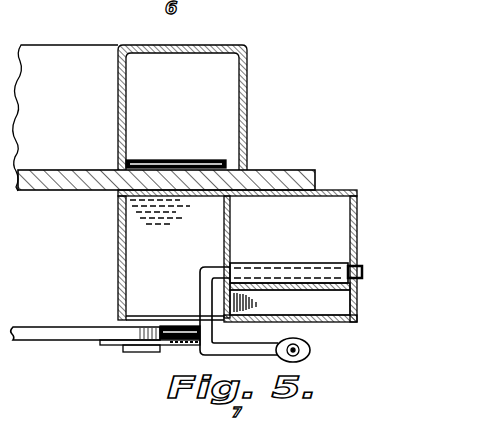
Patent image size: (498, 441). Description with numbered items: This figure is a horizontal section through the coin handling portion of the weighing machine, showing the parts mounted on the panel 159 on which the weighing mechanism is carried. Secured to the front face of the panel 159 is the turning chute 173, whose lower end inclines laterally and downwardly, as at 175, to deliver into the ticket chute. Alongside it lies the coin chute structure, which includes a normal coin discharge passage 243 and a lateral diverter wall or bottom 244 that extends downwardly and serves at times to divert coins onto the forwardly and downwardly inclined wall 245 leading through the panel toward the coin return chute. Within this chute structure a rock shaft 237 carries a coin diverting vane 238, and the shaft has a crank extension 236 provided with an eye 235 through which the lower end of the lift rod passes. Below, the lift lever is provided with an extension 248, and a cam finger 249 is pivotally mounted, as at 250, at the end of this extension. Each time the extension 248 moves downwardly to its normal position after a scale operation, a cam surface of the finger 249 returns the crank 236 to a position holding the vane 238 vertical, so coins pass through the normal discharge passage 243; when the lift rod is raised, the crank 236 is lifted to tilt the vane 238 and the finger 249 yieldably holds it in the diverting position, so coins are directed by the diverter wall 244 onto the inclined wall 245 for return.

The laterally and downwardly inclined lower end of turning chute 175 is at (50, 62).
The turning chute 173 is at (227, 68).
The panel 159 is at (75, 160).
The forwardly and downwardly inclined wall 245 is at (172, 220).
The rock shaft 237 is at (362, 270).
The coin diverting vane 238 is at (277, 270).
The lateral diverter wall or bottom 244 is at (333, 307).
The eye 235 is at (313, 353).
The crank extension 236 is at (262, 358).
The extension of lift lever 248 is at (37, 333).
The cam finger 249 is at (163, 345).
The pivot of cam finger 250 is at (127, 347).
The normal coin discharge passage 243 is at (343, 5).